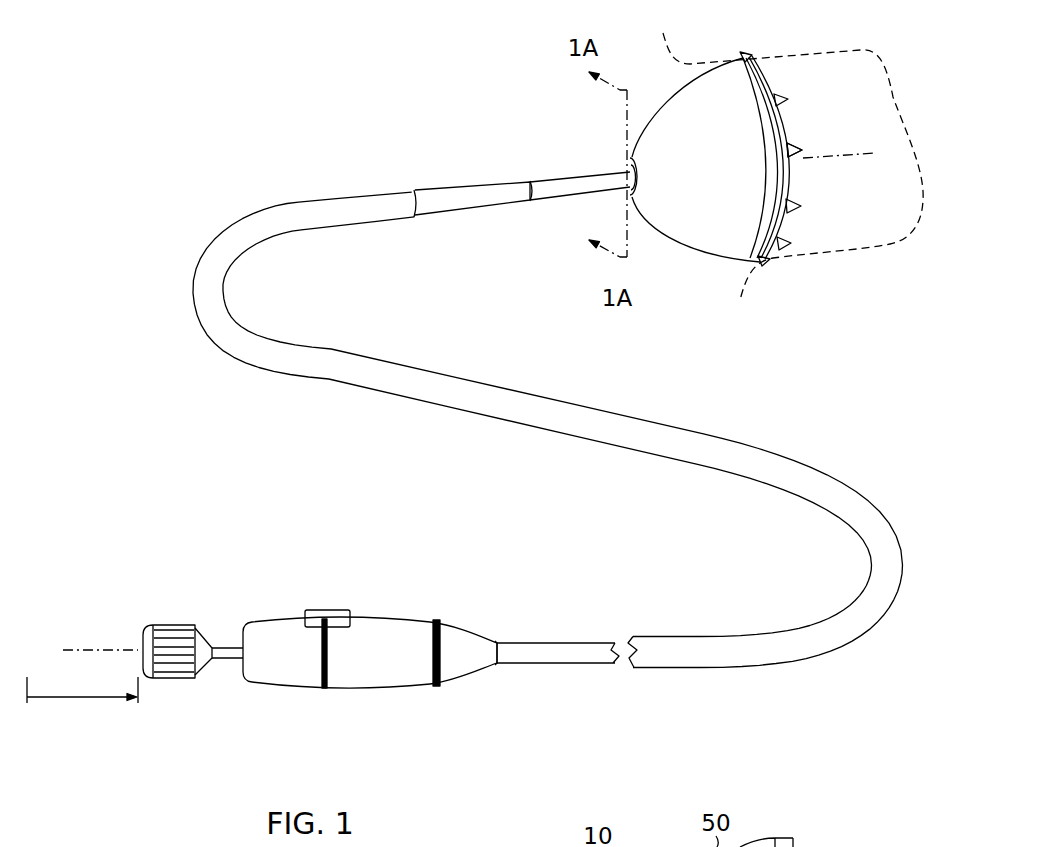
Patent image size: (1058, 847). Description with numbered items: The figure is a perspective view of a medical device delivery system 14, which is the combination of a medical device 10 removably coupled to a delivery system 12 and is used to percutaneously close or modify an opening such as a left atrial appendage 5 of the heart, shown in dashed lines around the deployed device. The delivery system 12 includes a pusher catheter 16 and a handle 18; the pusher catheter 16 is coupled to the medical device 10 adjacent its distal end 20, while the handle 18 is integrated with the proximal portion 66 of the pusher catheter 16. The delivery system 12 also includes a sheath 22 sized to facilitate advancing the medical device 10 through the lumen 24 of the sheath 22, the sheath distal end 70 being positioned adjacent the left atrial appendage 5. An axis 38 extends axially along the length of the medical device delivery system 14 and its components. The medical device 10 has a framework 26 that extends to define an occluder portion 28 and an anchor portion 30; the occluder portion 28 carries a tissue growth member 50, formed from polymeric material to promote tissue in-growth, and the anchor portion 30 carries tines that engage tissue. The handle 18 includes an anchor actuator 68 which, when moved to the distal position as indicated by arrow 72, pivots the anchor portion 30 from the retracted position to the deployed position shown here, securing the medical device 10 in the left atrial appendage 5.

The left atrial appendage 5 is at (860, 52).
The medical device 10 is at (726, 182).
The delivery system 12 is at (198, 183).
The medical device delivery system 14 is at (175, 82).
The pusher catheter 16 is at (482, 190).
The handle 18 is at (394, 690).
The distal end 20 is at (630, 160).
The sheath 22 is at (776, 445).
The lumen 24 is at (637, 668).
The framework 26 is at (793, 143).
The occluder portion 28 is at (737, 265).
The anchor portion 30 is at (812, 130).
The axis 38 is at (847, 157).
The tissue growth member 50 is at (697, 230).
The proximal portion 66 is at (504, 638).
The anchor actuator 68 is at (220, 643).
The sheath distal end 70 is at (416, 217).
The arrow 72 is at (82, 699).